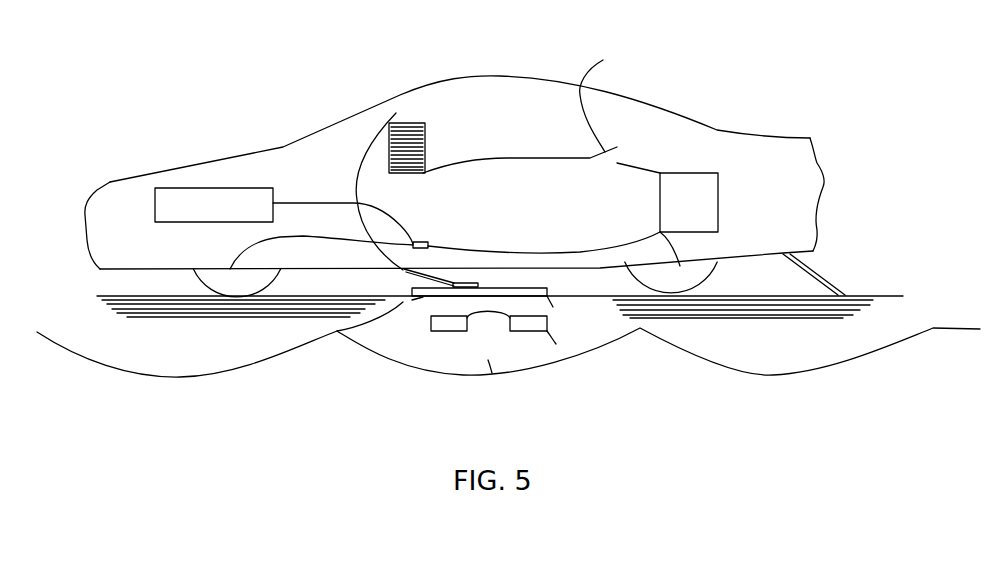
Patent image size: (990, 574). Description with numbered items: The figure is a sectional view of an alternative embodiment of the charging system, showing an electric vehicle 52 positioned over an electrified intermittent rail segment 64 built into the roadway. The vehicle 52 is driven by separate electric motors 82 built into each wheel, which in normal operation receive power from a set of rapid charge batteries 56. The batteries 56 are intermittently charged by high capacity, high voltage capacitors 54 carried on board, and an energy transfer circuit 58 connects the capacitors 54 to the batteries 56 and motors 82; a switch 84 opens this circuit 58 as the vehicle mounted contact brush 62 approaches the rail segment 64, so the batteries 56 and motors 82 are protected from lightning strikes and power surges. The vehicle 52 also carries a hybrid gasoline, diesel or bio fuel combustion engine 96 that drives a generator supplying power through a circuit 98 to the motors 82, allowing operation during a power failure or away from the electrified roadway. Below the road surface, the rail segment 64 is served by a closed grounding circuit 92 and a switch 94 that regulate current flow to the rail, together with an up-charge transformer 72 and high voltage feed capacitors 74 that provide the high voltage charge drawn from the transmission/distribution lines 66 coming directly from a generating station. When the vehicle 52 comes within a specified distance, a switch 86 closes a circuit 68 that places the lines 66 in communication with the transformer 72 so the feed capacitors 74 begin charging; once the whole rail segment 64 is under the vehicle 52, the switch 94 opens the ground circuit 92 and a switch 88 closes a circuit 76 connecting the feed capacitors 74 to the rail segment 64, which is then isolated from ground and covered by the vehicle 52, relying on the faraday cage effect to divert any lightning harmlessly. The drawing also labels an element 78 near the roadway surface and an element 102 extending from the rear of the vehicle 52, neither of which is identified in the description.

The electric vehicle 52 is at (680, 106).
The switch 84 is at (610, 97).
The energy transfer circuit 58 is at (502, 153).
The high voltage capacitors 54 is at (410, 123).
The rapid charge batteries 56 is at (698, 172).
The combustion engine 96 is at (212, 188).
The circuit 98 is at (328, 203).
The contact brush 62 is at (380, 254).
The electric motors 82 is at (192, 280).
The charging cable 102 is at (817, 277).
The ground surface 78 is at (868, 294).
The switch 94 is at (405, 307).
The rail segment 64 is at (527, 289).
The switch 88 is at (553, 303).
The grounding circuit 92 is at (337, 331).
The up-charge transformer 72 is at (431, 332).
The high voltage feed capacitors 74 is at (548, 332).
The circuit 68 is at (473, 336).
The switch 86 is at (486, 353).
The circuit 76 is at (549, 322).
The high voltage transmission/distribution lines 66 is at (768, 373).